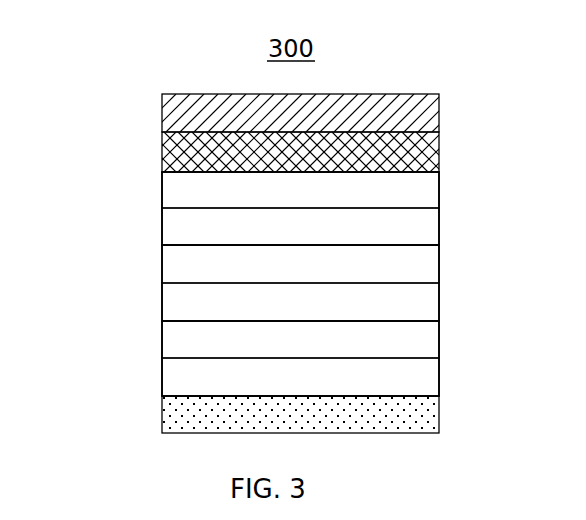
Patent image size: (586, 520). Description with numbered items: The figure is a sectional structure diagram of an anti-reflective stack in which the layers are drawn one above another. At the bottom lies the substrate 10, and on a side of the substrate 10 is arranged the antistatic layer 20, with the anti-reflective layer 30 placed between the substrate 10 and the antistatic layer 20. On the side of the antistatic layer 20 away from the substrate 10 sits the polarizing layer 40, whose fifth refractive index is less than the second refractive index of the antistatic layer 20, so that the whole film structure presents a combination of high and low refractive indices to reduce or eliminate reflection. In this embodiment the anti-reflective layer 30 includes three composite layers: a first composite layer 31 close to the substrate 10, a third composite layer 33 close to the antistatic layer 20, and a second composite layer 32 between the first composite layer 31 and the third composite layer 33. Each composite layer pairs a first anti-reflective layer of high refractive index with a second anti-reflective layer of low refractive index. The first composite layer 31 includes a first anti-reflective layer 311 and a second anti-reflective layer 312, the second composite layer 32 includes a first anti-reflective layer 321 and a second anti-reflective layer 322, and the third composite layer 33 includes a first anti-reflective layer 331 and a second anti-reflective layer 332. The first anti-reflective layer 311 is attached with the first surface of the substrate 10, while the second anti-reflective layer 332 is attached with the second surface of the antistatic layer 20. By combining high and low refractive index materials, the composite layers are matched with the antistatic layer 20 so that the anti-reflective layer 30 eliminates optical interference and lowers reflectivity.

The polarizing layer 40 is at (428, 115).
The antistatic layer 20 is at (430, 153).
The anti-reflective layer 30 is at (460, 170).
The third composite layer 33 is at (79, 198).
The second anti-reflective layer of the third composite layer 332 is at (162, 190).
The first anti-reflective layer of the third composite layer 331 is at (162, 232).
The second composite layer 32 is at (79, 257).
The second anti-reflective layer of the second composite layer 322 is at (162, 266).
The first anti-reflective layer of the second composite layer 321 is at (162, 303).
The first composite layer 31 is at (79, 337).
The second anti-reflective layer of the first composite layer 312 is at (162, 338).
The first anti-reflective layer of the first composite layer 311 is at (162, 378).
The substrate 10 is at (439, 415).